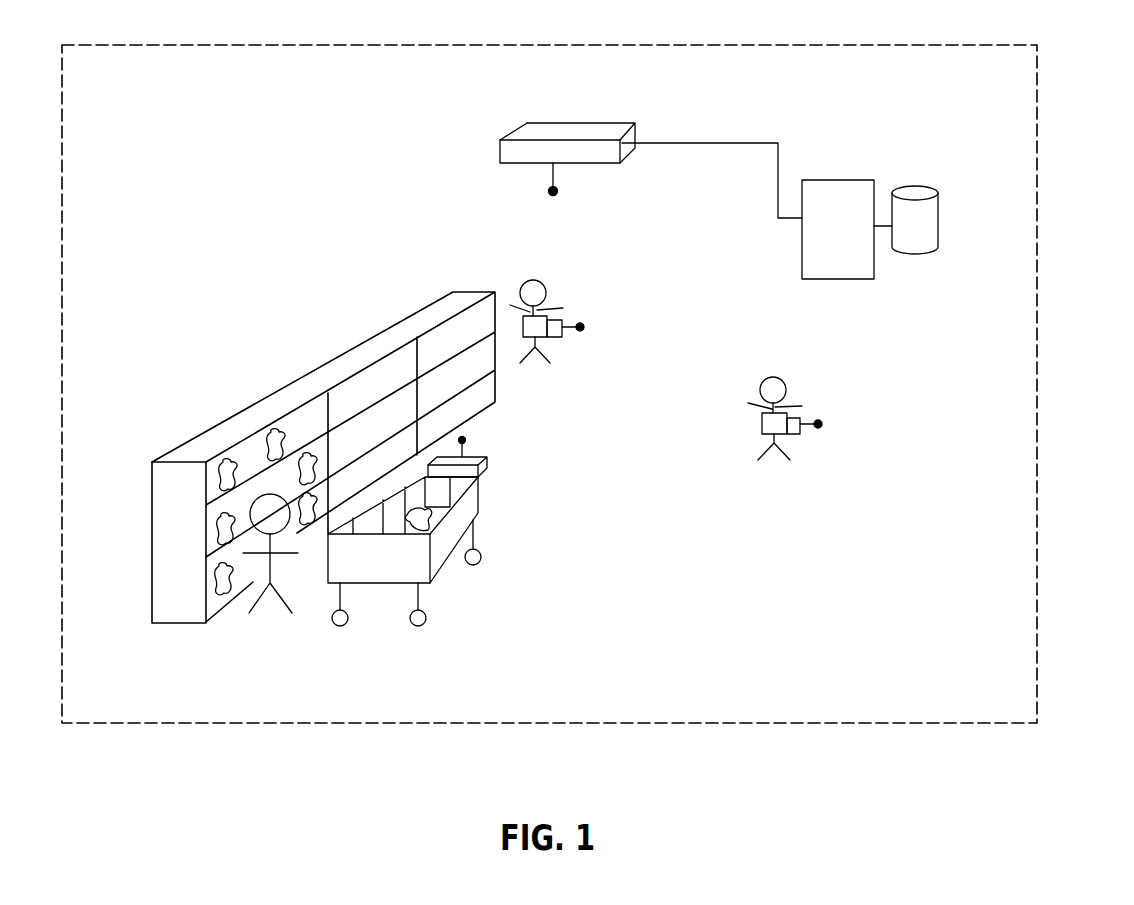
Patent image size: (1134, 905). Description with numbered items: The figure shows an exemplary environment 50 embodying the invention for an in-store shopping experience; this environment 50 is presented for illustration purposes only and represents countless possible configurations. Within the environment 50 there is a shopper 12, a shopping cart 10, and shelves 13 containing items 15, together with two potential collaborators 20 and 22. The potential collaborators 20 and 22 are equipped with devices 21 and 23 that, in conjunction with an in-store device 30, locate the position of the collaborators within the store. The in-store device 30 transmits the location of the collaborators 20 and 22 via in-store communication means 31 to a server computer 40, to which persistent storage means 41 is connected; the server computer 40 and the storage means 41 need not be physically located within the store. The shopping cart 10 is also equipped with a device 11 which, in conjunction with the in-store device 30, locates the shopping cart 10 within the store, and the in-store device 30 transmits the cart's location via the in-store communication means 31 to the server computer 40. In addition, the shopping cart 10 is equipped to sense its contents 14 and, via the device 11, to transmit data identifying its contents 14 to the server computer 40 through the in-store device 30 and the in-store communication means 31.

The shopping cart 10 is at (472, 508).
The device 11 is at (488, 462).
The shopper 12 is at (274, 565).
The shelves 13 is at (168, 538).
The contents 14 is at (432, 528).
The items 15 is at (278, 433).
The potential collaborator 20 is at (547, 290).
The device 21 is at (563, 335).
The potential collaborator 22 is at (785, 385).
The device 23 is at (800, 435).
The in-store device 30 is at (588, 125).
The in-store communication means 31 is at (700, 142).
The server computer 40 is at (838, 179).
The persistent storage means 41 is at (927, 192).
The environment 50 is at (1037, 202).